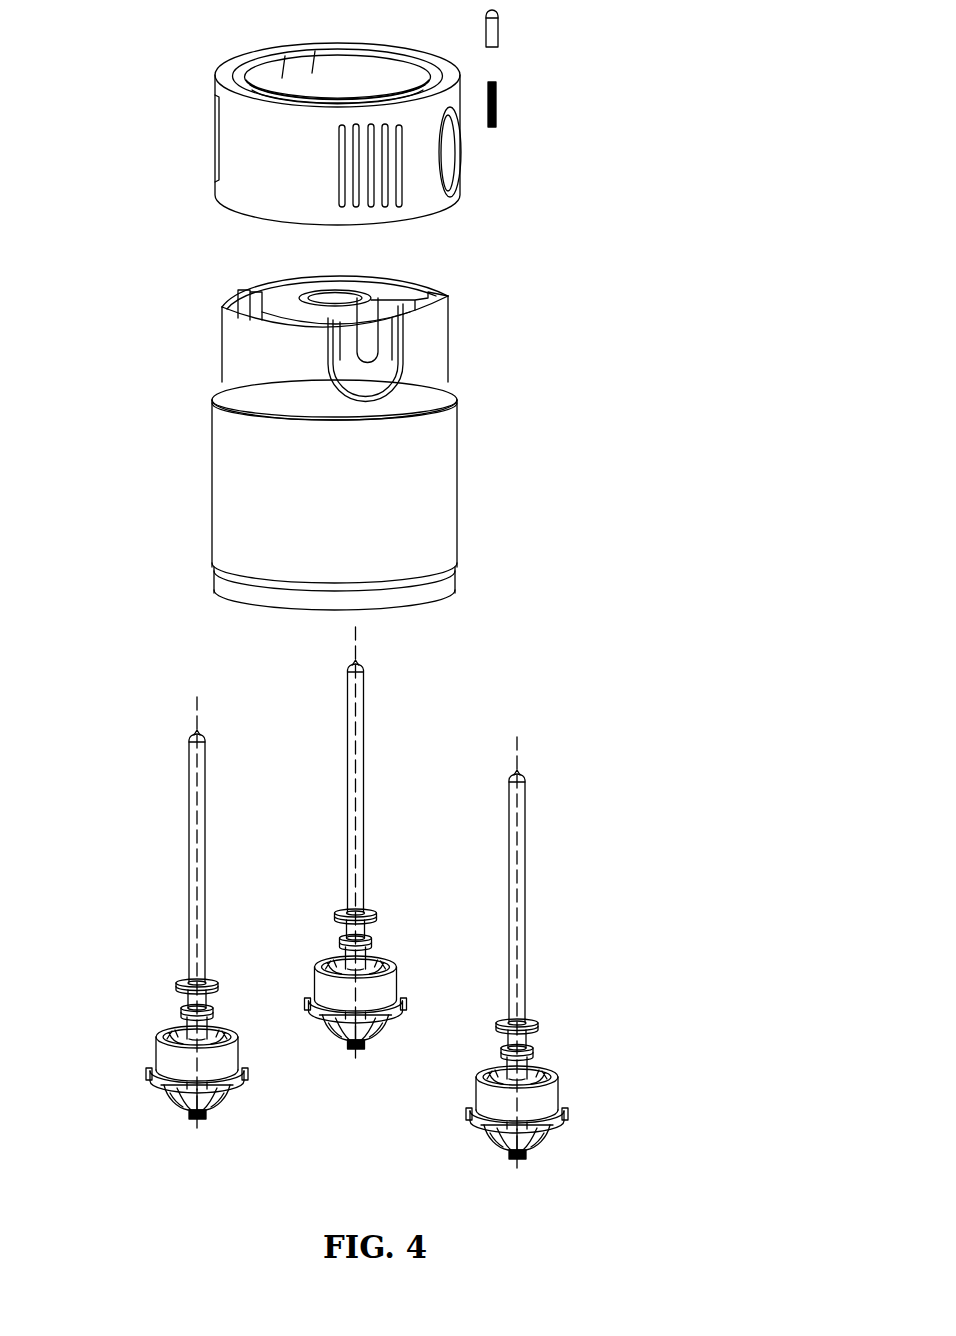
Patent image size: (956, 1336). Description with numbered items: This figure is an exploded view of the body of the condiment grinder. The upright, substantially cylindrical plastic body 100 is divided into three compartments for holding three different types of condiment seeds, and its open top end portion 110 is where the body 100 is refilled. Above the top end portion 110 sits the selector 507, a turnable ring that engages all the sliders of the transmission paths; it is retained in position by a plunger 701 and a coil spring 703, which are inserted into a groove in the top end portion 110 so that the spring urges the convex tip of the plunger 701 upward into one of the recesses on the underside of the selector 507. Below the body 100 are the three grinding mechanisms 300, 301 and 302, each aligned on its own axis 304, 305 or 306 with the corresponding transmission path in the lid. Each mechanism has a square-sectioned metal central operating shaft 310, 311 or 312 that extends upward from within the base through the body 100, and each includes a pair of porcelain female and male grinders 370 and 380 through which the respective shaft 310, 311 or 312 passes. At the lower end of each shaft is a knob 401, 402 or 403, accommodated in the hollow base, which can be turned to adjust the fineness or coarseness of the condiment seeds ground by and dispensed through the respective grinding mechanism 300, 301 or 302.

The plunger 701 is at (500, 34).
The coil spring 703 is at (498, 110).
The selector 507 is at (456, 192).
The top end portion 110 is at (440, 350).
The body 100 is at (443, 493).
The grinding mechanism 300 is at (145, 733).
The grinding mechanism 301 is at (307, 663).
The grinding mechanism 302 is at (628, 773).
The axis 304 is at (196, 722).
The axis 305 is at (354, 655).
The axis 306 is at (519, 763).
The central operating shaft 310 is at (203, 760).
The central operating shaft 311 is at (362, 700).
The central operating shaft 312 is at (523, 835).
The male grinder 380 is at (214, 1032).
The female grinder 370 is at (232, 1053).
The knob 401 is at (226, 1098).
The knob 402 is at (386, 1028).
The knob 403 is at (546, 1138).